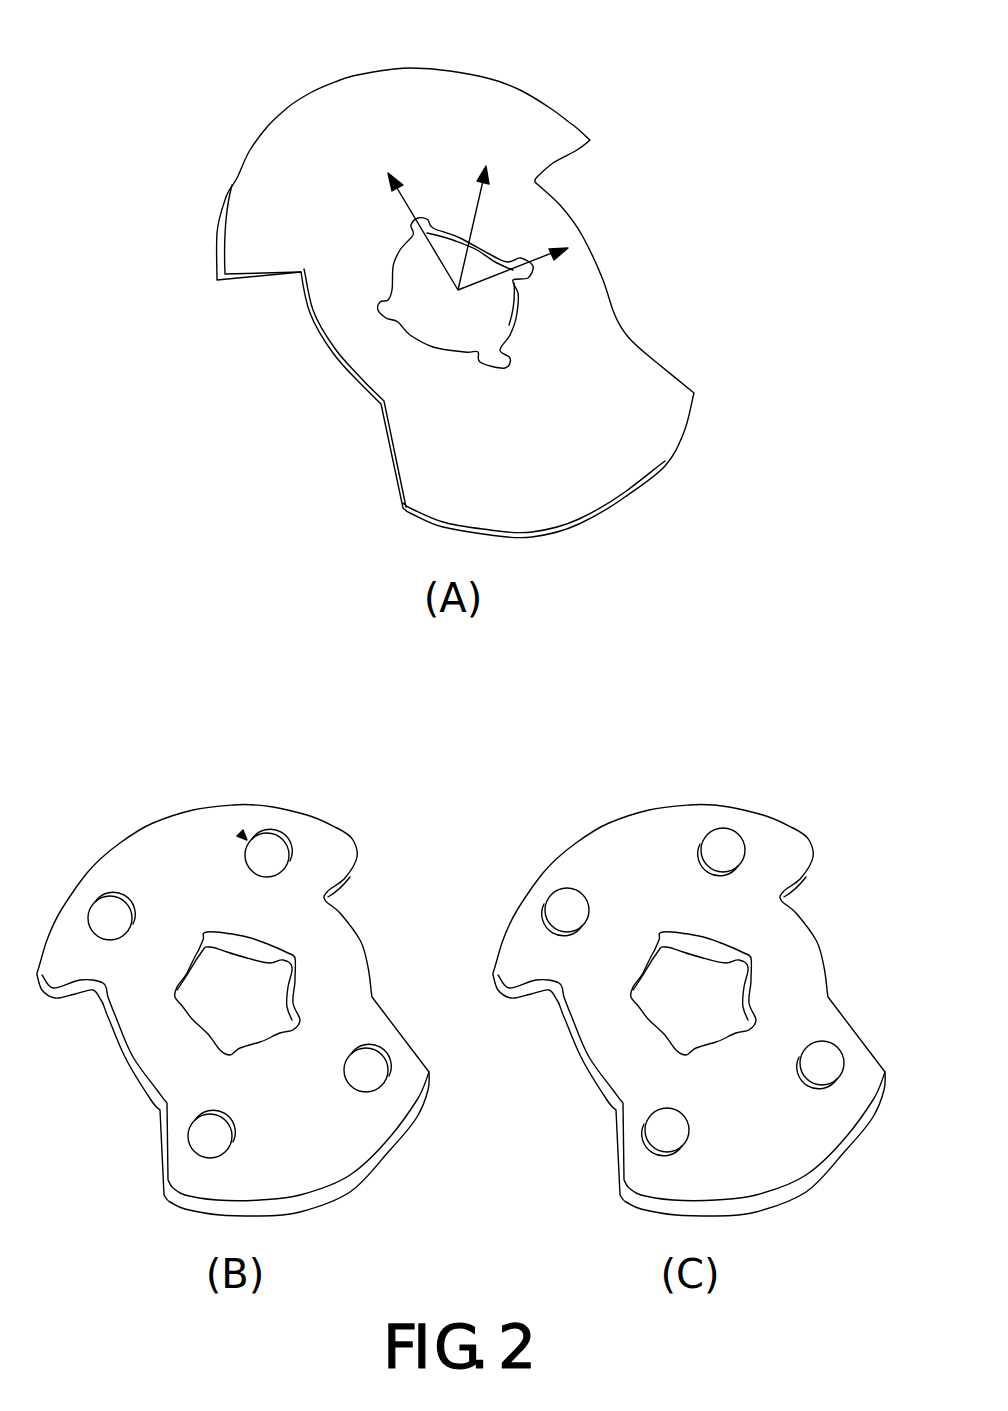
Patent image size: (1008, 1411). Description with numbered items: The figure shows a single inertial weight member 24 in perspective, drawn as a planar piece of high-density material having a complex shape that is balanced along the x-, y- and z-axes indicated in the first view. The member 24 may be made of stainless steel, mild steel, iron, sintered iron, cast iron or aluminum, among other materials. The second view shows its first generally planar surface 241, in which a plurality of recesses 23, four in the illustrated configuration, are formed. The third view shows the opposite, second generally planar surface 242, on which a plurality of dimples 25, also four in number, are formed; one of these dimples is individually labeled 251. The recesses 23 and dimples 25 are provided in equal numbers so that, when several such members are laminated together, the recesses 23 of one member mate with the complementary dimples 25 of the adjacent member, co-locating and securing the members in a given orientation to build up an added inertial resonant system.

The inertial weight member 24 is at (570, 97).
The first generally planar surface 241 is at (304, 1105).
The second generally planar surface 242 is at (759, 1105).
The recesses 23 is at (268, 852).
The dimples 25 is at (685, 943).
The reference hole of second plate 251 is at (726, 845).